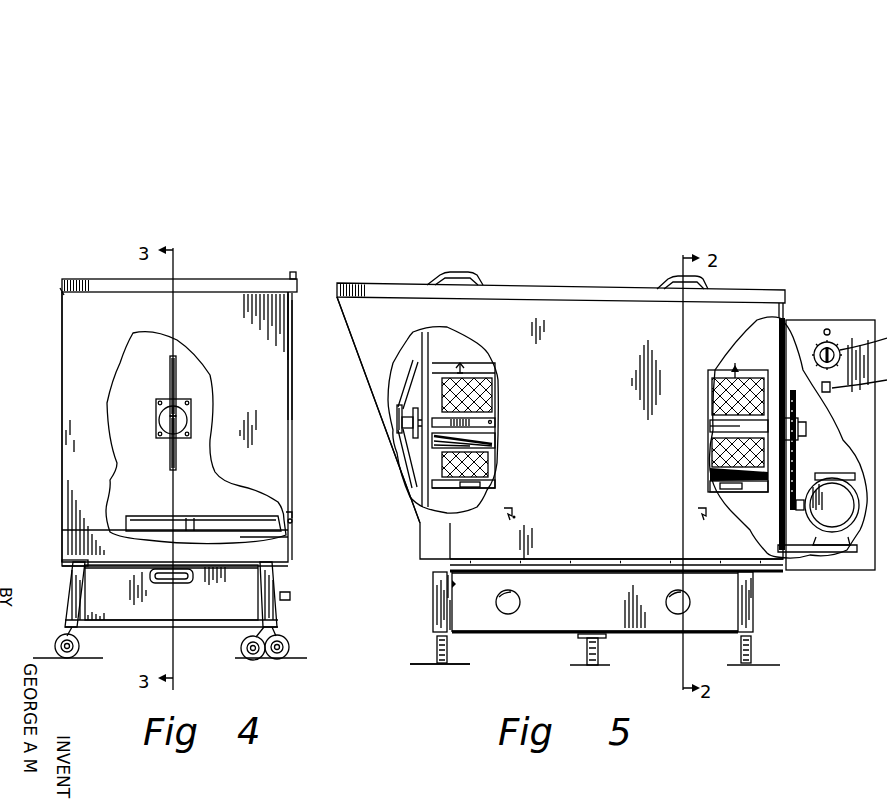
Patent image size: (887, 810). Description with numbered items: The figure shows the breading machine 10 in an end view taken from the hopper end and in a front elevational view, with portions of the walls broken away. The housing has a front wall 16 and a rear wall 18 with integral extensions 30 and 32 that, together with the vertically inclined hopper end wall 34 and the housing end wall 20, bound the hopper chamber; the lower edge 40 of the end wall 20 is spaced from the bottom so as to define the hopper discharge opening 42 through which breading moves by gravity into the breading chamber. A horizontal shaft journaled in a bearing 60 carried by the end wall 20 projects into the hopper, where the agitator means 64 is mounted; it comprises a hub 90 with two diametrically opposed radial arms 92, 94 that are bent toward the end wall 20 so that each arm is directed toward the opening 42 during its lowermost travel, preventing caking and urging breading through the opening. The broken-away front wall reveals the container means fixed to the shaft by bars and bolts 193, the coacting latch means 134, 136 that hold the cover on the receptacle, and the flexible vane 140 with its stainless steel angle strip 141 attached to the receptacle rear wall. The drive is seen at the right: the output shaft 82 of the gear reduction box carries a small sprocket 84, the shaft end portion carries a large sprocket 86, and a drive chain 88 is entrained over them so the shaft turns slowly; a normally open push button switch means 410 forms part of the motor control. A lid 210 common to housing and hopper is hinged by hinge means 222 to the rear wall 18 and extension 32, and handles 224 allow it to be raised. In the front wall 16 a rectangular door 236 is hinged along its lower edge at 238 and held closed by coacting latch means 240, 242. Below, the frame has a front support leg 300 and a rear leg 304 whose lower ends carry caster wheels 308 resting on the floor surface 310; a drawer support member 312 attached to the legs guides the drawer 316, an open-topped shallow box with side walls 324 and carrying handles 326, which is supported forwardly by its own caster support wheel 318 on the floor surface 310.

In FIG. 4, the breading machine 10 is at (90, 276).
In FIG. 5, the breading machine 10 is at (598, 285).
In FIG. 4, the front wall 16 is at (311, 368).
In FIG. 4, the rear wall 18 is at (62, 420).
In FIG. 4, the end wall 20 is at (190, 377).
In FIG. 5, the extension 30 is at (370, 349).
In FIG. 5, the extension 32 is at (403, 362).
In FIG. 4, the hopper end wall 34 is at (272, 358).
In FIG. 4, the lower edge 40 is at (190, 521).
In FIG. 4, the hopper discharge opening 42 is at (150, 523).
In FIG. 4, the bearing 60 is at (157, 405).
In FIG. 4, the agitator means 64 is at (170, 431).
In FIG. 5, the agitator means 64 is at (395, 441).
In FIG. 5, the output shaft 82 is at (800, 511).
In FIG. 5, the small sprocket 84 is at (800, 505).
In FIG. 5, the large sprocket 86 is at (798, 416).
In FIG. 5, the drive chain 88 is at (799, 474).
In FIG. 4, the hub 90 is at (179, 427).
In FIG. 5, the hub 90 is at (398, 420).
In FIG. 4, the arm 92 is at (170, 380).
In FIG. 5, the arm 92 is at (403, 380).
In FIG. 4, the arm 94 is at (170, 468).
In FIG. 5, the arm 94 is at (410, 472).
In FIG. 5, the latch means 134 is at (733, 372).
In FIG. 5, the latch means 136 is at (780, 318).
In FIG. 5, the vane 140 is at (492, 442).
In FIG. 5, the angle strip 141 is at (490, 460).
In FIG. 5, the bolt 193 is at (488, 427).
In FIG. 4, the lid 210 is at (228, 288).
In FIG. 4, the hinge means 222 is at (60, 290).
In FIG. 4, the handle 224 is at (294, 271).
In FIG. 5, the handle 224 is at (433, 280).
In FIG. 4, the door 236 is at (290, 538).
In FIG. 5, the door 236 is at (655, 523).
In FIG. 4, the hinge 238 is at (285, 565).
In FIG. 5, the hinge 238 is at (613, 566).
In FIG. 4, the latch means 240 is at (293, 519).
In FIG. 5, the latch means 240 is at (515, 517).
In FIG. 4, the latch means 242 is at (290, 506).
In FIG. 5, the latch means 242 is at (510, 510).
In FIG. 4, the front support leg 300 is at (265, 589).
In FIG. 4, the rear leg 304 is at (98, 580).
In FIG. 4, the caster wheel 308 is at (78, 649).
In FIG. 5, the caster wheel 308 is at (441, 651).
In FIG. 5, the floor surface 310 is at (463, 665).
In FIG. 4, the drawer support member 312 is at (162, 622).
In FIG. 5, the drawer 316 is at (473, 597).
In FIG. 4, the caster support wheel 318 is at (248, 650).
In FIG. 5, the caster support wheel 318 is at (586, 654).
In FIG. 4, the side wall 324 is at (66, 564).
In FIG. 4, the carrying handle 326 is at (189, 583).
In FIG. 5, the push button switch means 410 is at (830, 329).